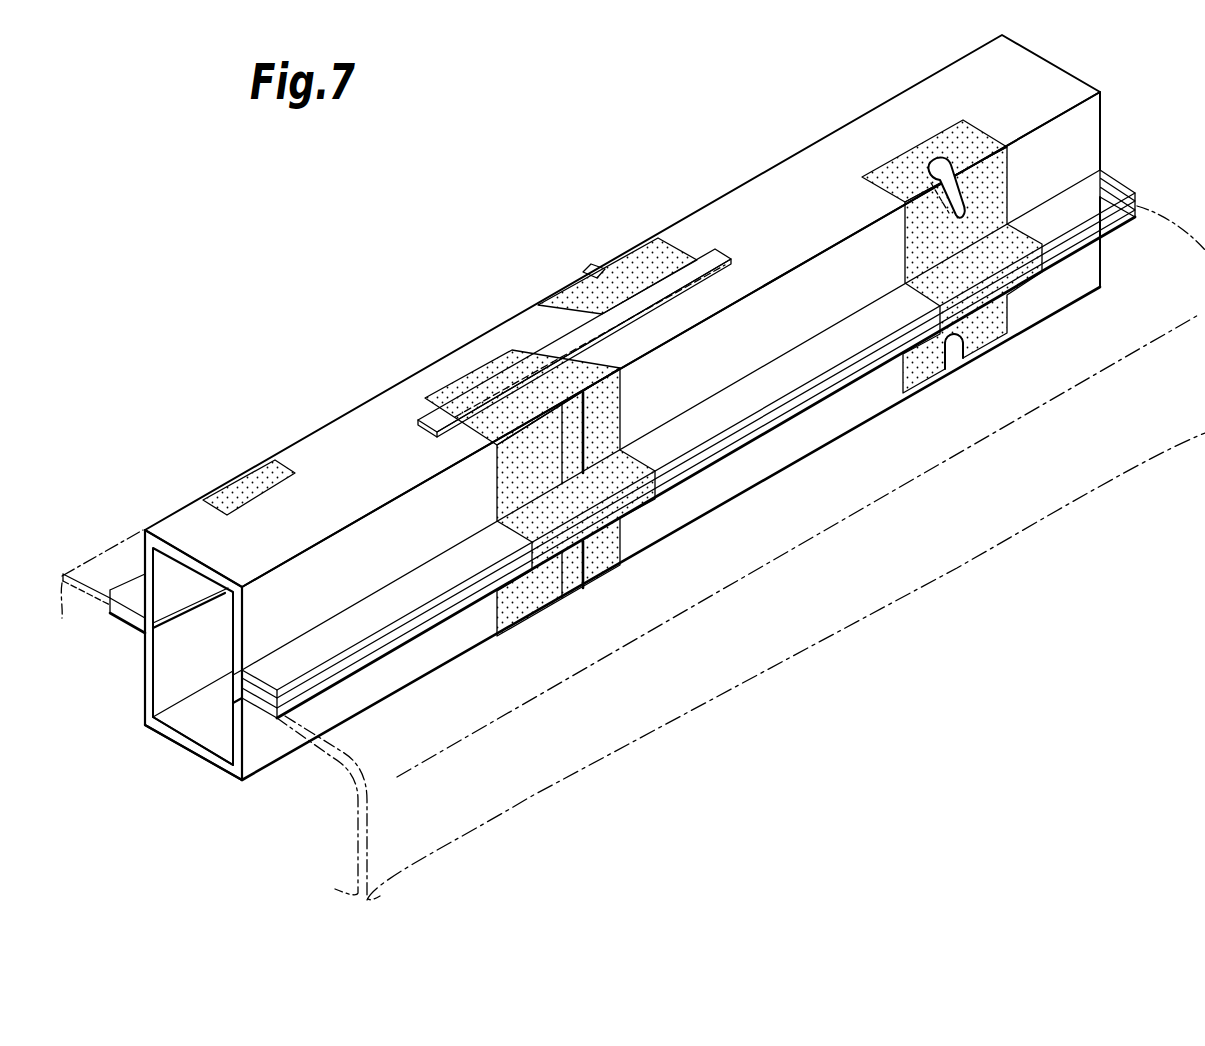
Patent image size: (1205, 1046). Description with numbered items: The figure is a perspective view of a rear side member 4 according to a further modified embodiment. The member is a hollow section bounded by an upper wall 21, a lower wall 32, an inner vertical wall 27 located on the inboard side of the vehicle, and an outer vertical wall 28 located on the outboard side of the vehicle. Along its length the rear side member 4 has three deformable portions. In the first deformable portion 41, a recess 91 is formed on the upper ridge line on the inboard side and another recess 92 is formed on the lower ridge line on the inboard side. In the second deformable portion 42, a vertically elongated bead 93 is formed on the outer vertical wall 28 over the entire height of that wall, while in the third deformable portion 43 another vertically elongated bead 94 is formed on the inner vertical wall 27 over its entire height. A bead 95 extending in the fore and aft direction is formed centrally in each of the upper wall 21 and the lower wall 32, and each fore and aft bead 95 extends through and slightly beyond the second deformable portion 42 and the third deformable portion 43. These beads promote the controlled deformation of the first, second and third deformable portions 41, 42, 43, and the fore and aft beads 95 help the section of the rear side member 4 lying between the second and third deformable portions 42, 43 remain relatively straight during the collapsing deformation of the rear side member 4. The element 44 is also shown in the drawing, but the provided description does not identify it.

The rear side member 4 is at (1030, 62).
The upper wall 21 is at (357, 443).
The inner vertical wall 27 is at (243, 638).
The outer vertical wall 28 is at (133, 548).
The lower wall 32 is at (198, 727).
The first deformable portion 41 is at (990, 186).
The second deformable portion 42 is at (635, 258).
The third deformable portion 43 is at (516, 478).
The sheet patch 44 is at (242, 492).
The recess 91 is at (946, 150).
The recess 92 is at (953, 375).
The vertically elongated bead 93 is at (593, 268).
The vertically elongated bead 94 is at (577, 440).
The bead 95 is at (562, 350).